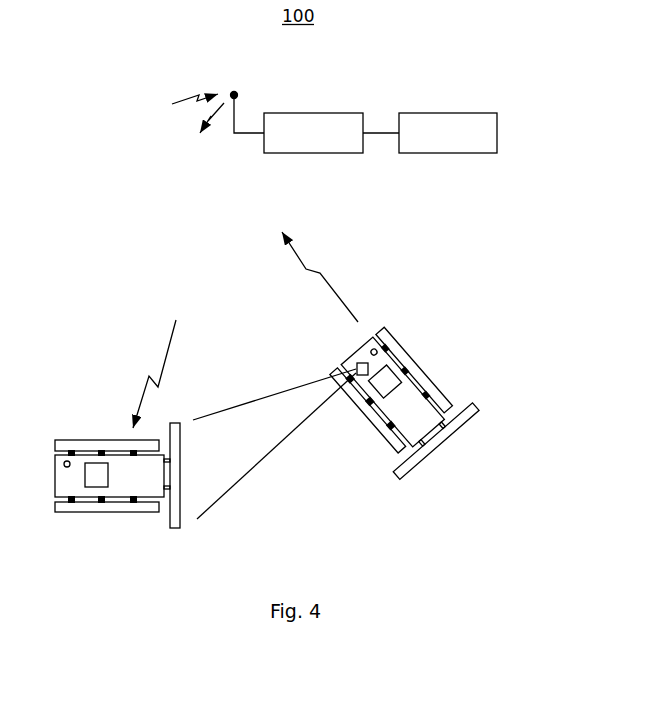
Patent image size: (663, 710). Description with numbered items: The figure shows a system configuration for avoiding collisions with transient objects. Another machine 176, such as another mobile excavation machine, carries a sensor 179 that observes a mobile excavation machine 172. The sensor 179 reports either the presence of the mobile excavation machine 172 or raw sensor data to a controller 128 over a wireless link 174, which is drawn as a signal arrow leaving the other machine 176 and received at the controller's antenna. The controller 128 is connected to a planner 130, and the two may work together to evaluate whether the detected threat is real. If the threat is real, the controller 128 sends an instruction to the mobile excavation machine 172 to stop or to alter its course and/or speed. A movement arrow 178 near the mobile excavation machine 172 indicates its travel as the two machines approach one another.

The controller 128 is at (313, 110).
The planner 130 is at (438, 113).
The mobile excavation machine 172 is at (108, 439).
The wireless link 174 is at (338, 302).
The another machine 176 is at (423, 368).
The direction of movement of first robot 178 is at (165, 352).
The sensor 179 is at (357, 366).